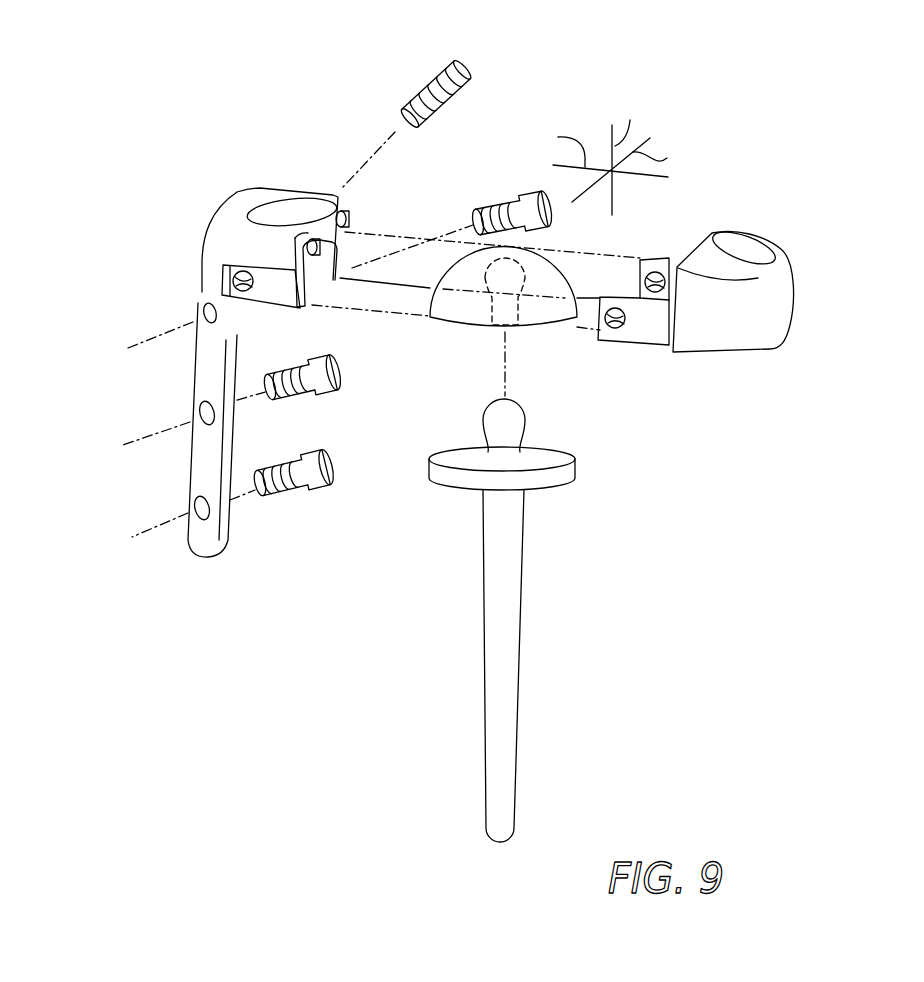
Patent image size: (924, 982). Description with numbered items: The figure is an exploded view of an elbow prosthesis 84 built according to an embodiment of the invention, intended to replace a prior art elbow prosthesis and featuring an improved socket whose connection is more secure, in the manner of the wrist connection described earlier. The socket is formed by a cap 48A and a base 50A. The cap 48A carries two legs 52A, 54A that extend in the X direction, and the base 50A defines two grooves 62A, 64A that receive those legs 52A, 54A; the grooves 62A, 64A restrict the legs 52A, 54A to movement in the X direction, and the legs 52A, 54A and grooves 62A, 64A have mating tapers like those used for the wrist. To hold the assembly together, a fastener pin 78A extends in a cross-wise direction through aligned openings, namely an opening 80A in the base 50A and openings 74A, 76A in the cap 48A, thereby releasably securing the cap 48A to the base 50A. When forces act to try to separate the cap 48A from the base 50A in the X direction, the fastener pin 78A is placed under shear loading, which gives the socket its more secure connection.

The elbow prosthesis 84 is at (778, 111).
The cap 48A is at (792, 272).
The base 50A is at (206, 250).
The leg 52A is at (650, 323).
The leg 54A is at (678, 265).
The groove 62A is at (263, 292).
The groove 64A is at (350, 270).
The opening 74A is at (606, 322).
The opening 76A is at (644, 272).
The fastener pin 78A is at (415, 95).
The opening 80A is at (222, 288).